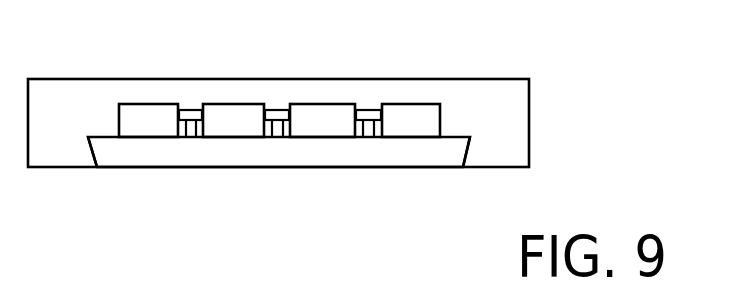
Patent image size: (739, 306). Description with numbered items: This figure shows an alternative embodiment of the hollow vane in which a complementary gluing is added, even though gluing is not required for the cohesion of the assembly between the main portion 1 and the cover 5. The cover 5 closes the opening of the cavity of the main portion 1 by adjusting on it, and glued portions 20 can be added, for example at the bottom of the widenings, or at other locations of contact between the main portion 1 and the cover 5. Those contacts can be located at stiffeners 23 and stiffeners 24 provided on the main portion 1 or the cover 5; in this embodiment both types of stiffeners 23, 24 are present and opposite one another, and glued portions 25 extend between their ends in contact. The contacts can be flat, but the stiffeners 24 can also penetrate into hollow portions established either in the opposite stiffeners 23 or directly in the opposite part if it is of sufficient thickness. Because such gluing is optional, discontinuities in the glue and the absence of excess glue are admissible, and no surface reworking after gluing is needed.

The main portion 1 is at (359, 72).
The cover 5 is at (383, 193).
The glued portions 20 is at (99, 134).
The stiffeners 23 is at (382, 111).
The stiffeners 24 is at (185, 127).
The glued portions 25 is at (288, 111).